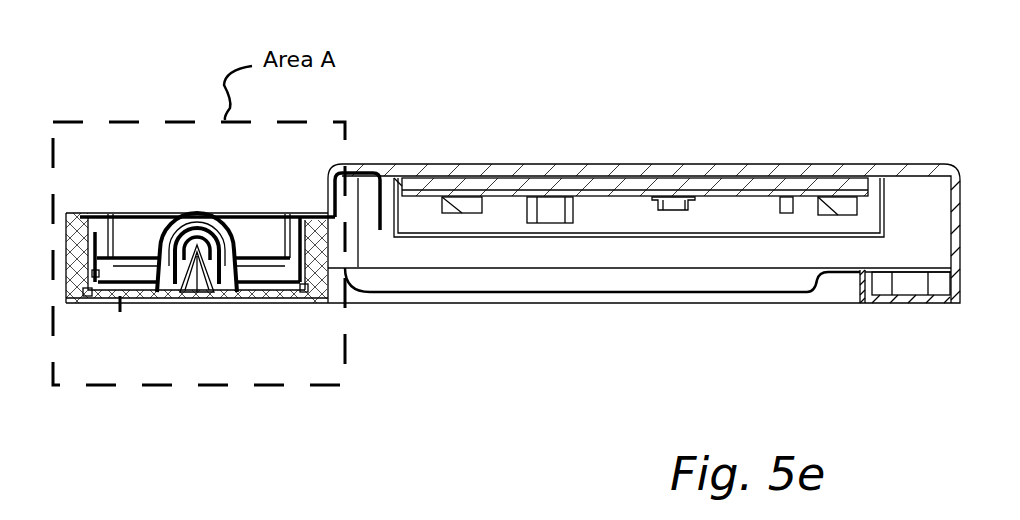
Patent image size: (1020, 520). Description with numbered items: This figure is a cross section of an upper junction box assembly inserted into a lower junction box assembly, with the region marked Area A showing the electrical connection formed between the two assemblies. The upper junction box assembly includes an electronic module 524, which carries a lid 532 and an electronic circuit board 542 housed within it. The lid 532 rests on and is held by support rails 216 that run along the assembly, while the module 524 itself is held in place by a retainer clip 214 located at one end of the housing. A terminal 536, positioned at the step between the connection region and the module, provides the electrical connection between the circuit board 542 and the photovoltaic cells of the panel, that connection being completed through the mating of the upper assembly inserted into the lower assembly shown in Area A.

The support rails 216 is at (478, 292).
The lid 532 is at (633, 268).
The electronic module 524 is at (645, 165).
The electronic circuit board 542 is at (730, 195).
The terminal 536 is at (372, 165).
The retainer clip 214 is at (915, 303).